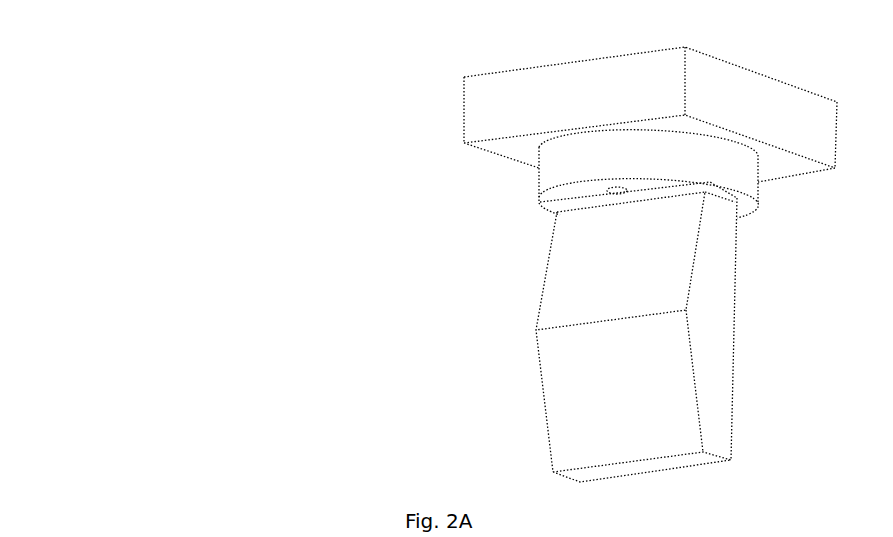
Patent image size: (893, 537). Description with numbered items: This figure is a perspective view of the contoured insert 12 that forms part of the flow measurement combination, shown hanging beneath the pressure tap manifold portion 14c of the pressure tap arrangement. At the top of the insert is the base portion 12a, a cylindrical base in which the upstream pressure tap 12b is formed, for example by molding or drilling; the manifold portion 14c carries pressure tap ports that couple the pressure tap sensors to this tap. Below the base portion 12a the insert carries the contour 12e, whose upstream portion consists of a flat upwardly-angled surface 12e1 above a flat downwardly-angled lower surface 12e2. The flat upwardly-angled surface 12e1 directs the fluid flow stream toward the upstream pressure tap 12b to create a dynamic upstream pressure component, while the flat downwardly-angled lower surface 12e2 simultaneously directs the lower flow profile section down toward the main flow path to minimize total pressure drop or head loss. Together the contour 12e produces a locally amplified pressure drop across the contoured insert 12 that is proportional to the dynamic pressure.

The pressure tap manifold portion 14c is at (505, 103).
The base portion 12a is at (568, 163).
The upstream tap 12b is at (607, 188).
The flat upwardly-angled surface 12e1 is at (587, 248).
The contoured insert 12 is at (482, 319).
The contour 12e is at (537, 340).
The flat downwardly-angled lower surface 12e2 is at (585, 398).